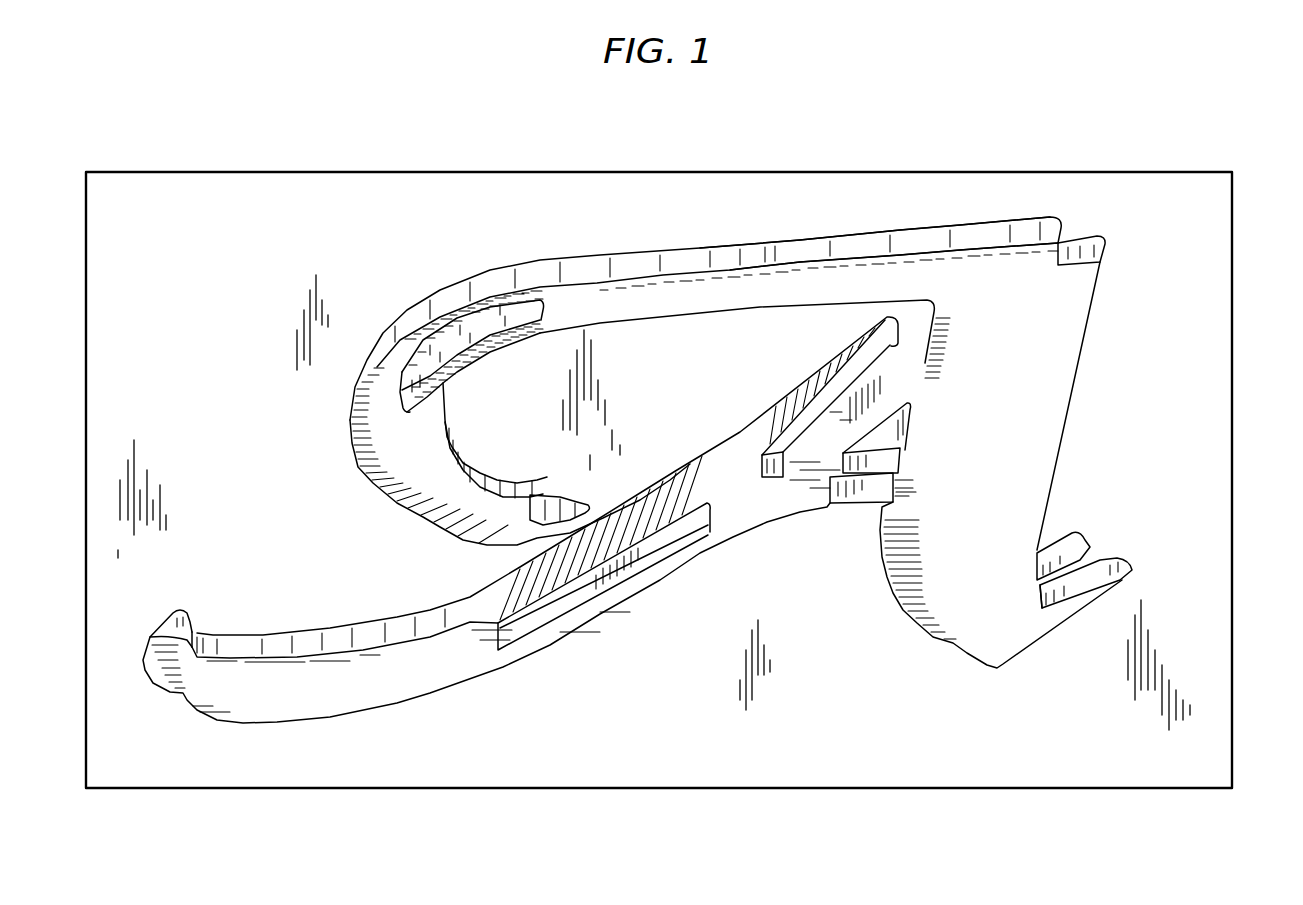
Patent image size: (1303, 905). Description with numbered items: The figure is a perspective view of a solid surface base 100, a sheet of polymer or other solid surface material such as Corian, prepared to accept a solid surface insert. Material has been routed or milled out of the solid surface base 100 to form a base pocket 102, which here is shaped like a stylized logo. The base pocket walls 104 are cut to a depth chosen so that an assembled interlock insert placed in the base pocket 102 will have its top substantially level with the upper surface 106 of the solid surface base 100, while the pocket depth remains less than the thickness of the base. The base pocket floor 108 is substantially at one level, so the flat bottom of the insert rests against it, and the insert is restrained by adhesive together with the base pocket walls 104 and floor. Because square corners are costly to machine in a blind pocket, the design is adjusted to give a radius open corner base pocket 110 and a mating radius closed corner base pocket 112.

The solid surface base 100 is at (199, 343).
The base pocket 102 is at (707, 489).
The base pocket walls 104 is at (960, 241).
The upper surface 106 is at (1155, 220).
The base pocket floor 108 is at (387, 688).
The radius open corner base pocket 110 is at (1078, 547).
The radius closed corner base pocket 112 is at (907, 460).